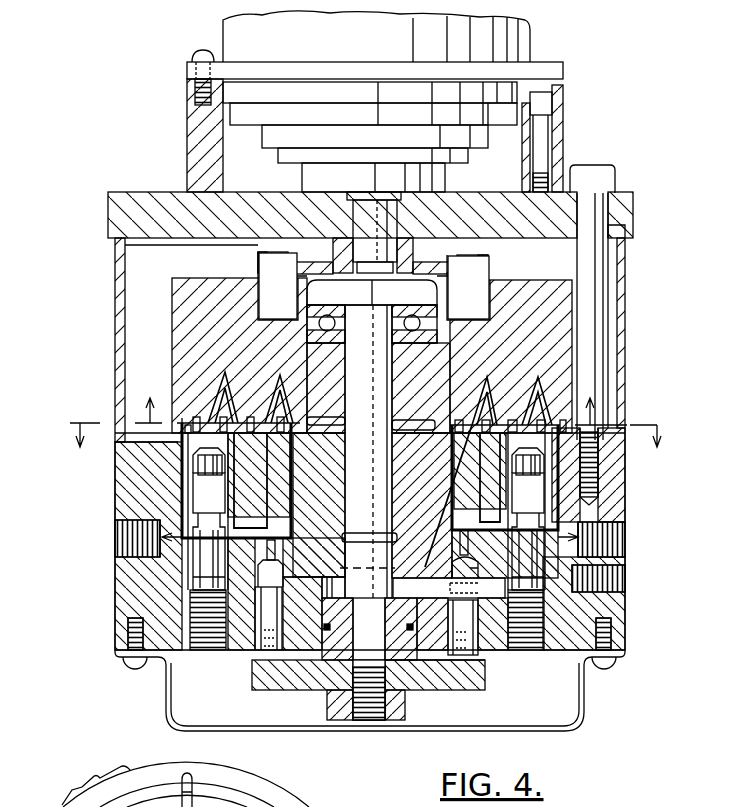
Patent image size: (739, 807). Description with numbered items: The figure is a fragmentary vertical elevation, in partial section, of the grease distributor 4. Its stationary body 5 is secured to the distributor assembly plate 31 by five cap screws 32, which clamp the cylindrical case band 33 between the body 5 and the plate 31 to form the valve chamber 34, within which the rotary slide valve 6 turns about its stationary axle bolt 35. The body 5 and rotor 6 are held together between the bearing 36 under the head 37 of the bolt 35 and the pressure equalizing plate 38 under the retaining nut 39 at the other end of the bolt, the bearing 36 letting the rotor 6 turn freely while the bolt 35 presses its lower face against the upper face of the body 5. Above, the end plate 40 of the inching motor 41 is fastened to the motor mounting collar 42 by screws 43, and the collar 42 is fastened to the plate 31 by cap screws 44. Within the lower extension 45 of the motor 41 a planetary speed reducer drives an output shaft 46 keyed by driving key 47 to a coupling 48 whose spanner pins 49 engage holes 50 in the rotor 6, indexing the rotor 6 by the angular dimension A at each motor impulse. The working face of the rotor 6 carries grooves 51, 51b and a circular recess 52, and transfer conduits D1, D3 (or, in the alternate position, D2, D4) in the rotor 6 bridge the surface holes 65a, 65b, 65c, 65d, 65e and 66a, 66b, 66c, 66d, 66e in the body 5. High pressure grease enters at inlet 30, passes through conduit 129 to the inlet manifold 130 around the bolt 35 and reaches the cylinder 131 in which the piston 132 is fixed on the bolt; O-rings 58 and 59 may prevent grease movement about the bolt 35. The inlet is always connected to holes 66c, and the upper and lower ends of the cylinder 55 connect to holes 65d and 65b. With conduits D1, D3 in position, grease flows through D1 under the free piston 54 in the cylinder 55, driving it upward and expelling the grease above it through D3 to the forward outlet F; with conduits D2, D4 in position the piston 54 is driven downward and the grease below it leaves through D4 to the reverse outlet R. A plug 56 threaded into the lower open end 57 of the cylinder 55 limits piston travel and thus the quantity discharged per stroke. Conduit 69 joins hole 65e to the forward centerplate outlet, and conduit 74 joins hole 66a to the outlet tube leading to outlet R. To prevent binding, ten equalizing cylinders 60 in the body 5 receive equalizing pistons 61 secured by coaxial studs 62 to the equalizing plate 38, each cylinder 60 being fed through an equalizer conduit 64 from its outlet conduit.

The grease distributor 4 is at (62, 367).
The stationary body part 5 is at (115, 495).
The rotary slide valve 6 is at (195, 282).
The inlet 30 is at (625, 582).
The distributor assembly plate 31 is at (142, 193).
The cap screws 32 is at (592, 167).
The cylindrical case band 33 is at (115, 298).
The valve chamber 34 is at (186, 343).
The stationary axle bolt 35 is at (368, 512).
The bearing 36 is at (437, 333).
The head 37 is at (372, 292).
The pressure equalizing plate 38 is at (252, 676).
The retaining nut 39 is at (327, 703).
The end plate 40 is at (187, 71).
The inching motor 41 is at (376, 36).
The motor mounting collar 42 is at (187, 132).
The screws 43 is at (204, 50).
The cap screws 44 is at (558, 103).
The lower extension 45 is at (370, 137).
The output shaft 46 is at (374, 232).
The driving key 47 is at (405, 247).
The coupling 48 is at (488, 262).
The spanner pins 49 is at (264, 254).
The holes 50 is at (263, 312).
The grooves 51 is at (185, 415).
The circular recess 52 is at (318, 418).
The free piston 54 is at (368, 493).
The cylinder 55 is at (193, 465).
The plug 56 is at (193, 570).
The lower open end 57 is at (206, 651).
The O-ring 58 is at (395, 535).
The O-ring 59 is at (324, 627).
The equalizing cylinders 60 is at (258, 577).
The equalizing pistons 61 is at (366, 621).
The coaxial studs 62 is at (255, 655).
The equalizer conduit 64 is at (278, 550).
The surface hole 65a is at (447, 417).
The surface hole 65b is at (468, 408).
The surface hole 65c is at (502, 408).
The surface hole 65d is at (525, 414).
The surface hole 65e is at (562, 410).
The surface hole 66a is at (306, 405).
The surface hole 66b is at (262, 400).
The surface hole 66c is at (242, 408).
The surface hole 66d is at (208, 401).
The surface hole 66e is at (174, 415).
The conduit 69 is at (588, 475).
The conduit 74 is at (298, 470).
The conduit 129 is at (422, 583).
The grease inlet manifold 130 is at (322, 590).
The cylinder 131 is at (322, 611).
The piston 132 is at (415, 682).
The transfer conduit D1 is at (487, 377).
The transfer conduit D2 is at (225, 370).
The transfer conduit D3 is at (541, 378).
The transfer conduit D4 is at (283, 372).
The reverse outlet R is at (115, 537).
The forward outlet F is at (625, 537).
The angular dimension A is at (88, 784).
The indexing member (detail) 51b is at (260, 803).